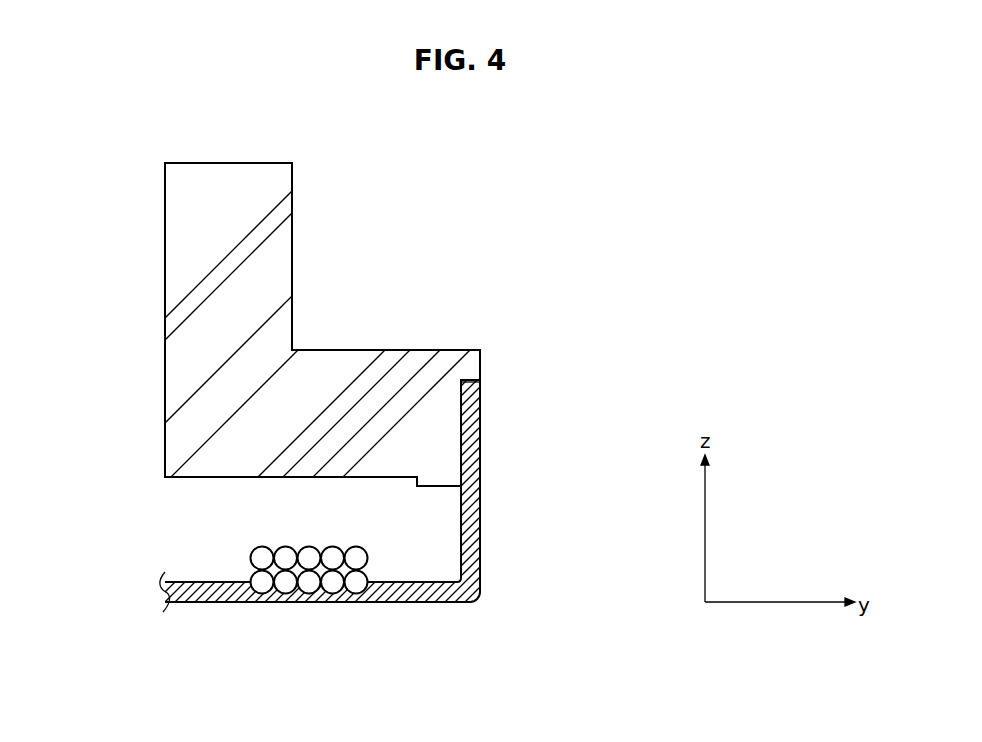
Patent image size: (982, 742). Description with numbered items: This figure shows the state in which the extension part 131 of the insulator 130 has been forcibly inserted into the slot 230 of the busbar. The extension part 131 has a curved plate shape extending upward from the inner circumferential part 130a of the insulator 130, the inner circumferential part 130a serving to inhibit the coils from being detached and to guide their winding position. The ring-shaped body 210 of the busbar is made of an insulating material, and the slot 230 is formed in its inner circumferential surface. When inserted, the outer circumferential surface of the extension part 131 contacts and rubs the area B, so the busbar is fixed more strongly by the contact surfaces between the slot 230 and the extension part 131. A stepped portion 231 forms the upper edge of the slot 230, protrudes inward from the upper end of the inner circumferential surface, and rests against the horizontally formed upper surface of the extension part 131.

The body 210 is at (170, 258).
The slot 230 is at (460, 432).
The stepped portion 231 is at (465, 378).
The extension part 131 is at (483, 455).
The inner circumferential part 130a is at (483, 555).
The insulator 130 is at (295, 601).
The area B is at (486, 406).